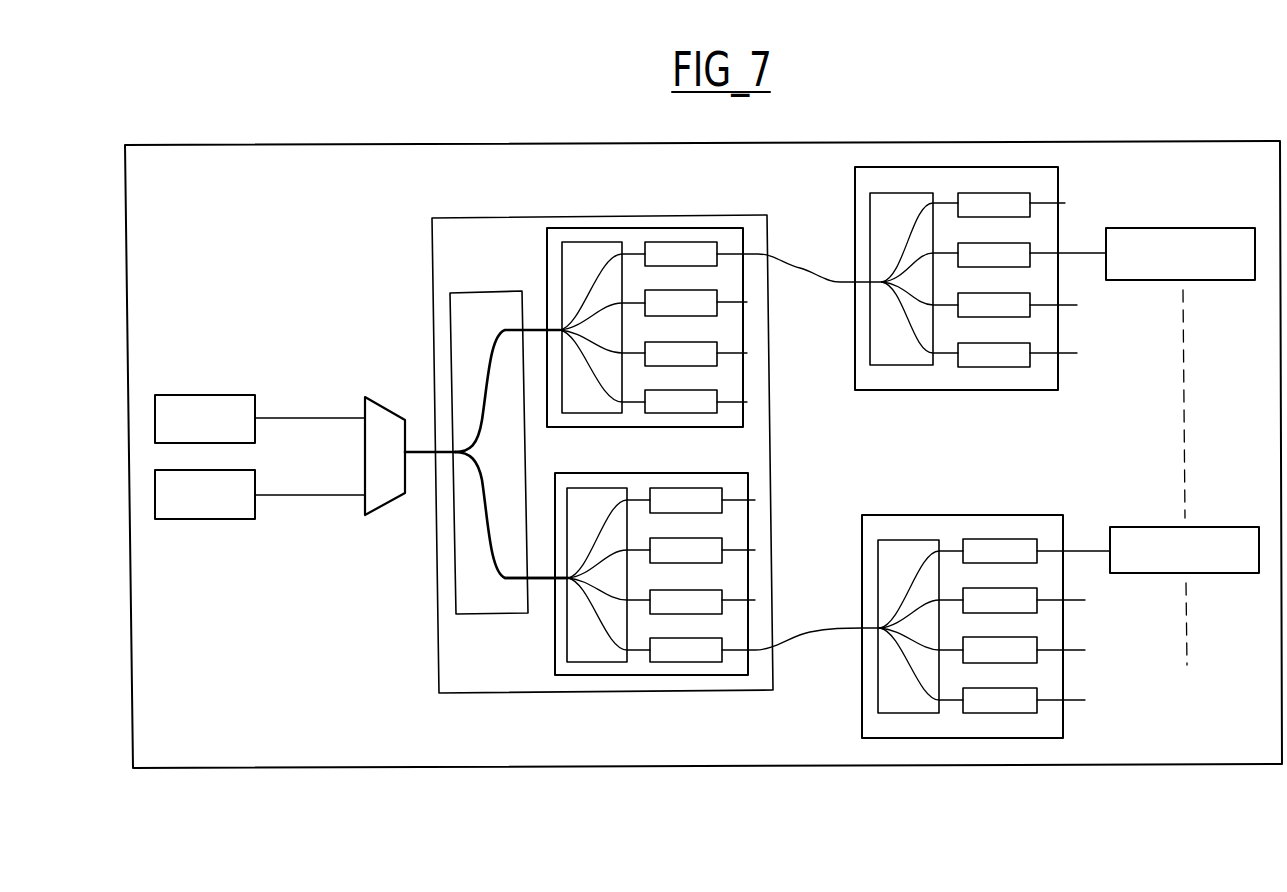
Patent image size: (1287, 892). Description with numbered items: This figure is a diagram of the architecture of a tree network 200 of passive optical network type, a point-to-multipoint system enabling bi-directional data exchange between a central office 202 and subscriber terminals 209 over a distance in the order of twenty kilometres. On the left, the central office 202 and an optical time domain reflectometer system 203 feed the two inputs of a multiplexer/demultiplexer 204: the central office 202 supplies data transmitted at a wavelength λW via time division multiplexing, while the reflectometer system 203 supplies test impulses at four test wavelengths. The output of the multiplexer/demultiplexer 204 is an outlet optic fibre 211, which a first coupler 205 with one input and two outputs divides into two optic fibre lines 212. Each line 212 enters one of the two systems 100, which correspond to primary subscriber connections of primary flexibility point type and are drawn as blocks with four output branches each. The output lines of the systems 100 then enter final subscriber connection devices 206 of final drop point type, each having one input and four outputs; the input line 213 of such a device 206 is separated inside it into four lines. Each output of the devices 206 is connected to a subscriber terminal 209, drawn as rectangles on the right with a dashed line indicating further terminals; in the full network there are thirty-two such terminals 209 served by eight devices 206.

The system 100 is at (586, 226).
The tree network 200 is at (348, 783).
The central office 202 is at (203, 395).
The optical time domain reflectometer system 203 is at (207, 520).
The multiplexer/demultiplexer 204 is at (379, 397).
The coupler 205 is at (487, 346).
The final subscriber connection device 206 is at (1019, 742).
The subscriber terminal 209 is at (1180, 228).
The optic fibre 211 is at (420, 456).
The optic fibre line 212 is at (539, 584).
The input line 213 is at (799, 263).